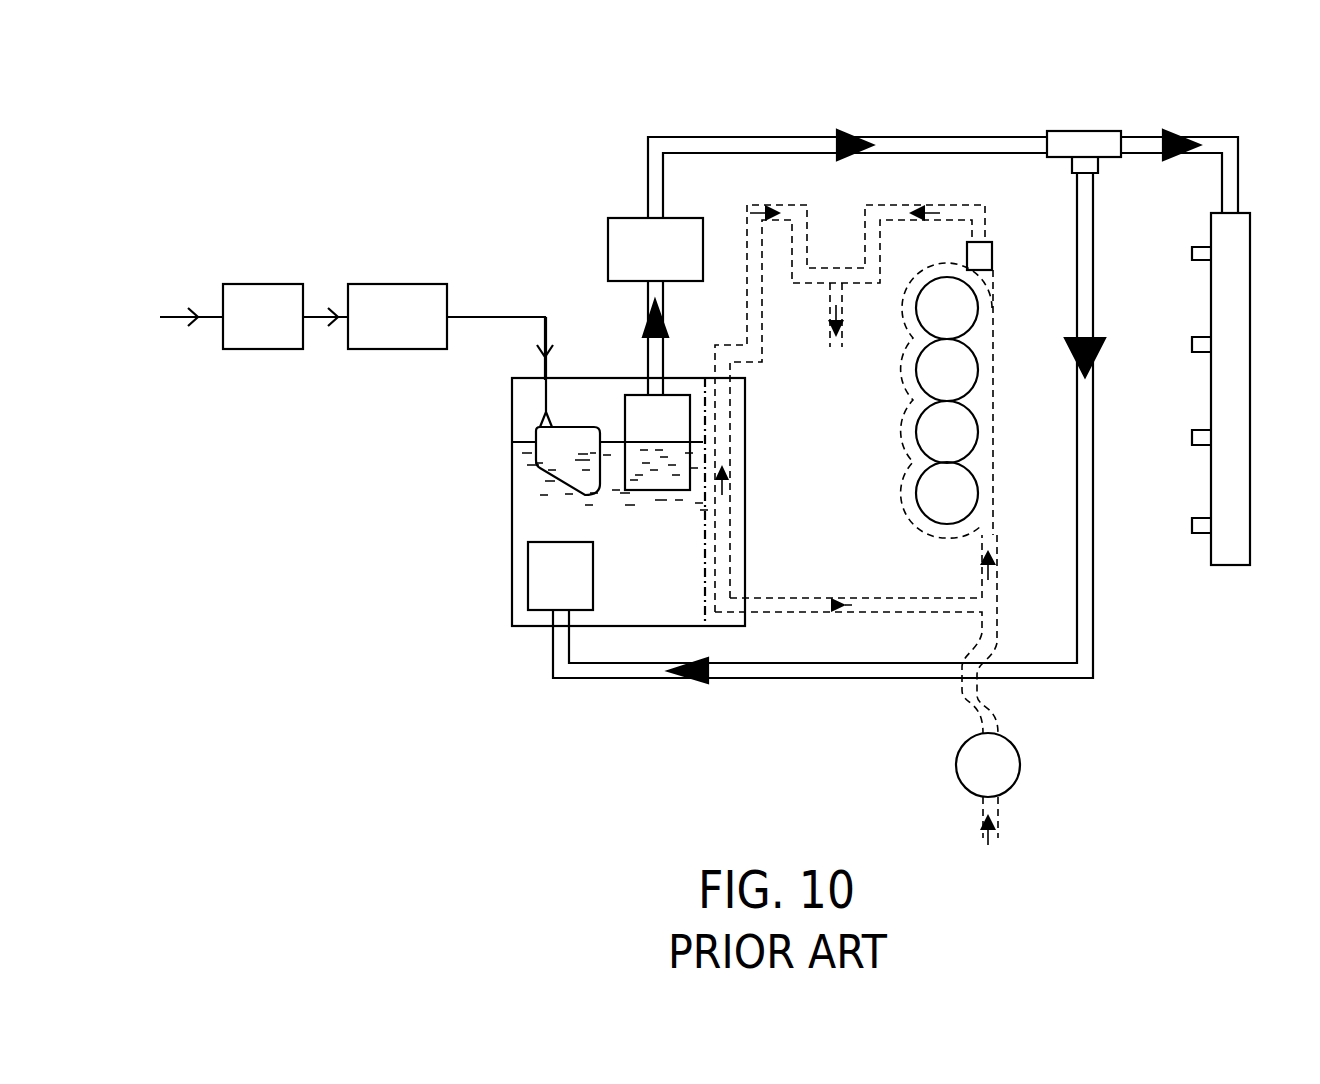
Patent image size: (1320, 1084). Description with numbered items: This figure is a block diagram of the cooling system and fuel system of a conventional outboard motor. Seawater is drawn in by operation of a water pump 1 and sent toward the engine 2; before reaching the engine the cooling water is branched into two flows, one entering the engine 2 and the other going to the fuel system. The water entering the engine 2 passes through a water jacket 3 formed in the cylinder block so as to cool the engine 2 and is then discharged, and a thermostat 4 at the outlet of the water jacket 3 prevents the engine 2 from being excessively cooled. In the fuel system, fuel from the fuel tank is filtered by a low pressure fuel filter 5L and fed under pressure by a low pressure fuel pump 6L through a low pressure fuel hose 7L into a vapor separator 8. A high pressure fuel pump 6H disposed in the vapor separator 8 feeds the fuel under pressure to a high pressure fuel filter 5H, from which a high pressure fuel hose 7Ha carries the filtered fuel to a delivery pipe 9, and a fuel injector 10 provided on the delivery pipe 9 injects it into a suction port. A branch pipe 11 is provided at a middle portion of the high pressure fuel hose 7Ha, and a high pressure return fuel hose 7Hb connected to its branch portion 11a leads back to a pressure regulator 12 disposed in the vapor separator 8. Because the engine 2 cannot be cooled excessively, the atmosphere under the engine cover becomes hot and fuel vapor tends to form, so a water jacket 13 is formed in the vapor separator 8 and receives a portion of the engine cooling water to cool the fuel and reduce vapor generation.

The water pump 1 is at (1020, 765).
The engine 2 is at (1003, 352).
The water jacket 3 is at (900, 382).
The thermostat 4 is at (985, 255).
The low pressure fuel filter 5L is at (247, 347).
The low pressure fuel pump 6L is at (370, 347).
The low pressure fuel hose 7L is at (487, 317).
The high pressure fuel filter 5H is at (613, 250).
The high pressure fuel pump 6H is at (595, 378).
The high pressure fuel hose 7Ha is at (800, 137).
The high pressure return fuel hose 7Hb is at (1095, 537).
The vapor separator 8 is at (512, 503).
The delivery pipe 9 is at (1240, 340).
The fuel injector 10 is at (1195, 340).
The branch pipe 11 is at (1096, 118).
The branch portion 11a is at (1090, 170).
The pressure regulator 12 is at (540, 588).
The water jacket 13 is at (747, 530).